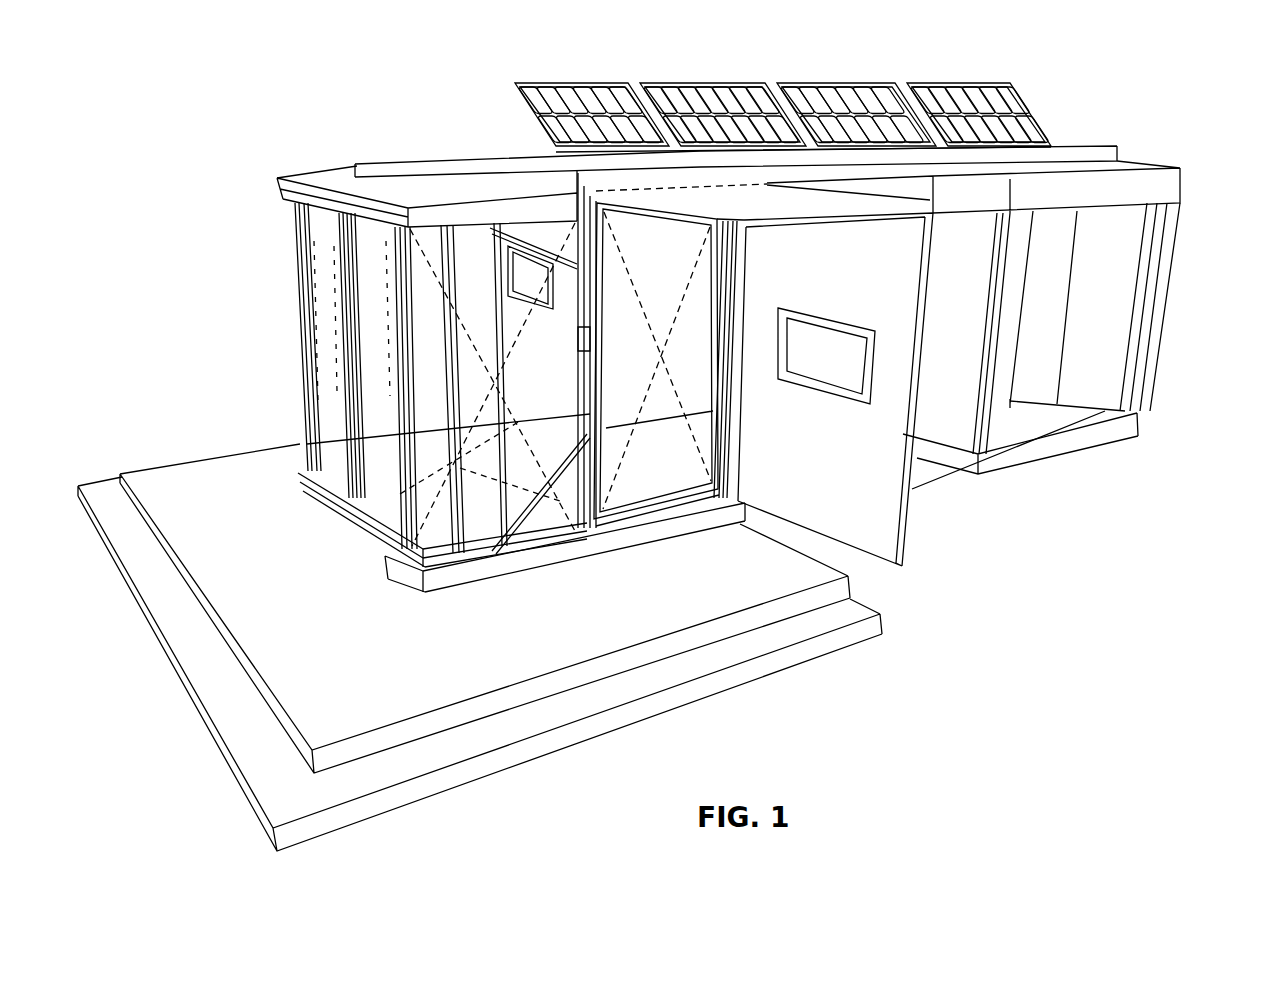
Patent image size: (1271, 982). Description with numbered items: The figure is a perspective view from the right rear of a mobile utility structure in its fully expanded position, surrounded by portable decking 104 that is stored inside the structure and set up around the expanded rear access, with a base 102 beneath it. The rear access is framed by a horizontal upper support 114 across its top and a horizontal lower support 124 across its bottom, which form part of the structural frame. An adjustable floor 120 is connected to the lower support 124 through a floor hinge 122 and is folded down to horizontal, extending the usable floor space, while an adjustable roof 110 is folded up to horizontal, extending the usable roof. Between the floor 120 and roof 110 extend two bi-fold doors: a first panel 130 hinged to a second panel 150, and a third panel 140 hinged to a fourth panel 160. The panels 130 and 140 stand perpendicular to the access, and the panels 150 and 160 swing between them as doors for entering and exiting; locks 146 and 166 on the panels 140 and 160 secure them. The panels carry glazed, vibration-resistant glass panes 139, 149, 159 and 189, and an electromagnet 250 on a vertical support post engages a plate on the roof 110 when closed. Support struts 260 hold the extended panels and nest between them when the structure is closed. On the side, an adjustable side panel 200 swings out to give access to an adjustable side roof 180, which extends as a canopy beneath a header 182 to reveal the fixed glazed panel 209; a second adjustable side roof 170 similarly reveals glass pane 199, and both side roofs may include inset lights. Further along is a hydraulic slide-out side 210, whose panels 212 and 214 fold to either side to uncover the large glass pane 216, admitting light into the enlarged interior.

The base platform 102 is at (925, 472).
The portable decking 104 is at (832, 640).
The adjustable roof 110 is at (322, 182).
The horizontal upper support 114 is at (422, 165).
The adjustable floor 120 is at (300, 487).
The floor hinge 122 is at (480, 493).
The horizontal lower support 124 is at (583, 547).
The first panel 130 is at (331, 350).
The glass pane 139 is at (427, 317).
The third panel 140 is at (405, 556).
The lock 146 is at (413, 580).
The glass pane 149 is at (490, 376).
The second panel 150 is at (323, 480).
The glass pane 159 is at (321, 337).
The fourth panel 160 is at (340, 528).
The lock 166 is at (357, 512).
The adjustable side roof 170 is at (397, 160).
The adjustable side roof 180 is at (843, 212).
The door header 182 is at (718, 188).
The wall stud 189 is at (370, 355).
The glass pane 199 is at (473, 257).
The adjustable side panel 200 is at (948, 390).
The glass pane 209 is at (656, 364).
The hydraulic slide-out side 210 is at (1090, 428).
The panel 212 is at (1150, 375).
The panel 214 is at (995, 425).
The glass pane 216 is at (1117, 290).
The electromagnet 250 is at (582, 345).
The support struts 260 is at (505, 227).